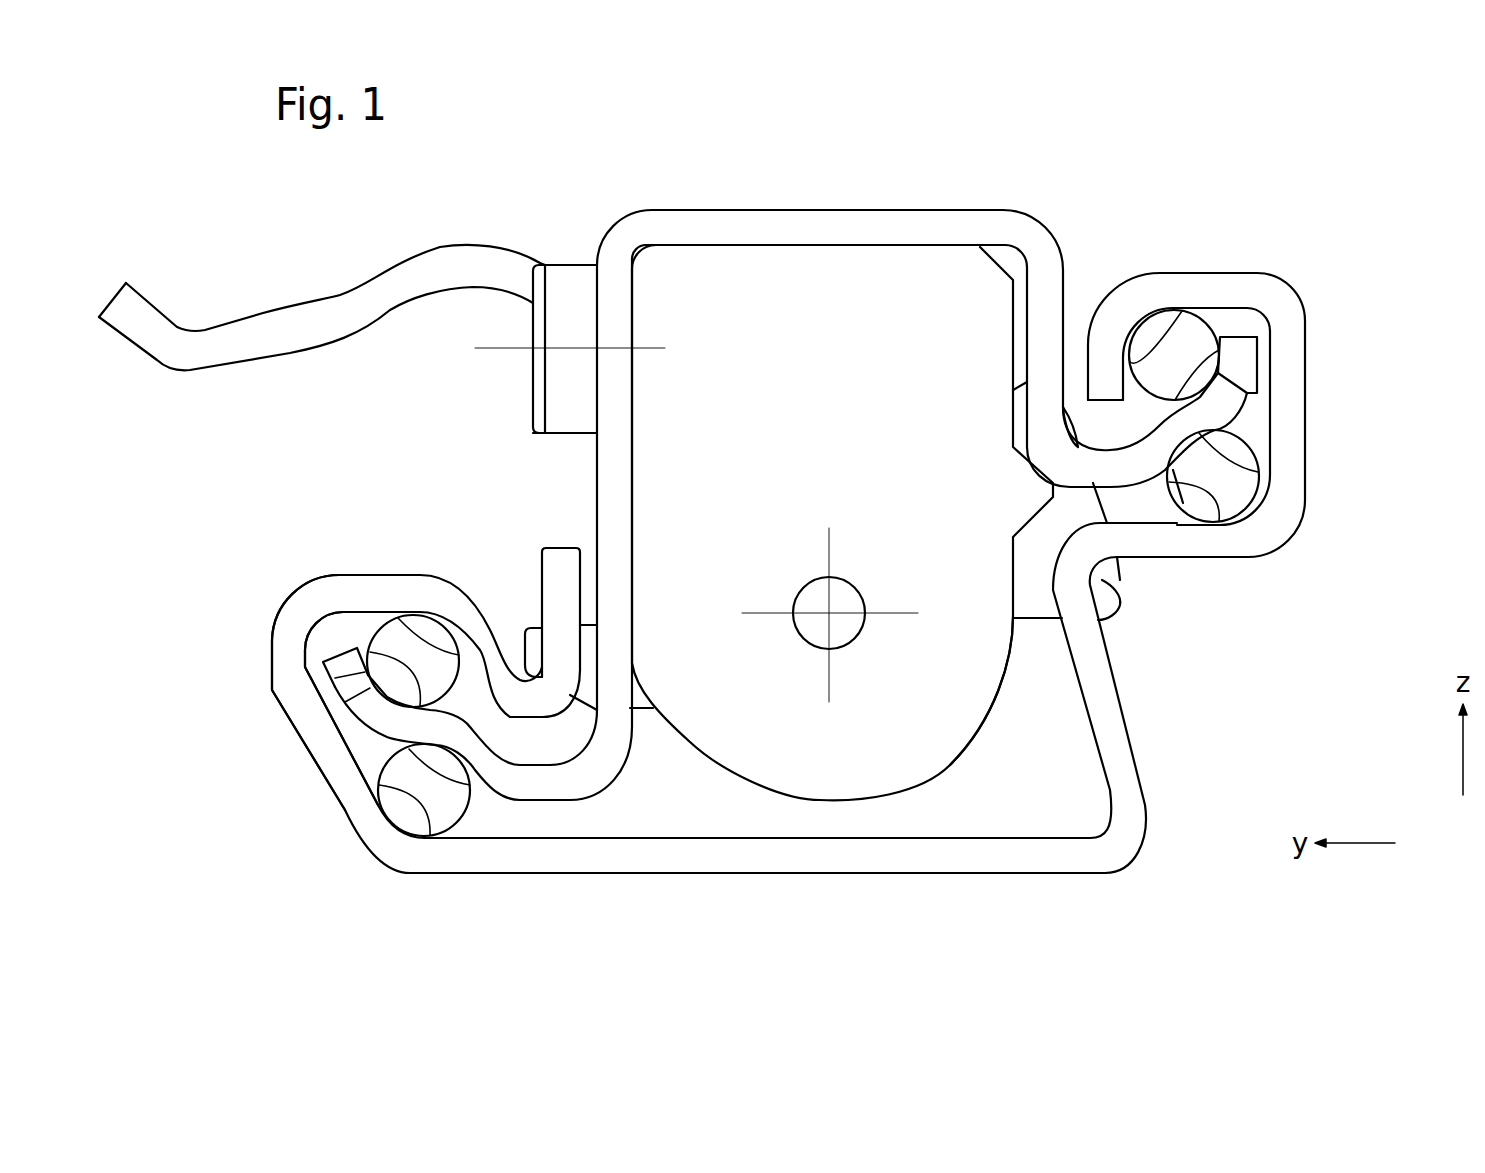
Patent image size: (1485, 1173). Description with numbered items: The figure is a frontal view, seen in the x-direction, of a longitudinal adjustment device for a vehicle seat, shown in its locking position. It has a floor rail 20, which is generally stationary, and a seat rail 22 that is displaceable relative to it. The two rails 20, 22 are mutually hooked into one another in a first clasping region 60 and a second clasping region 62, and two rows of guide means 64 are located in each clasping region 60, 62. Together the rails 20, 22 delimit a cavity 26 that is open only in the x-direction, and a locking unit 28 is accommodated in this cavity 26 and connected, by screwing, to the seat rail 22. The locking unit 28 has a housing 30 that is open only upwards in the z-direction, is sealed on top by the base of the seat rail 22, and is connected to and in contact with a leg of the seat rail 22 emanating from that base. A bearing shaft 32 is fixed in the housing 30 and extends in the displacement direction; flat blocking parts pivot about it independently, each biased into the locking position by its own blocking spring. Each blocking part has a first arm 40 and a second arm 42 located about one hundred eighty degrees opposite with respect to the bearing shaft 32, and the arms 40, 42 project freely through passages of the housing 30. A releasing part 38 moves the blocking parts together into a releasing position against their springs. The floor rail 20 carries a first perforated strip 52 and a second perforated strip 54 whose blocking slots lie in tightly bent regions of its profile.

The floor rail 20 is at (1103, 840).
The seat rail 22 is at (980, 227).
The cavity 26 is at (1020, 677).
The locking unit 28 is at (967, 775).
The housing 30 is at (793, 353).
The bearing shaft 32 is at (817, 630).
The releasing part 38 is at (263, 327).
The first arm 40 is at (1077, 500).
The second arm 42 is at (537, 633).
The first perforated strip 52 is at (1123, 600).
The second perforated strip 54 is at (552, 742).
The first clasping region 60 is at (1297, 277).
The second clasping region 62 is at (382, 553).
The guide means 64 is at (1240, 457).